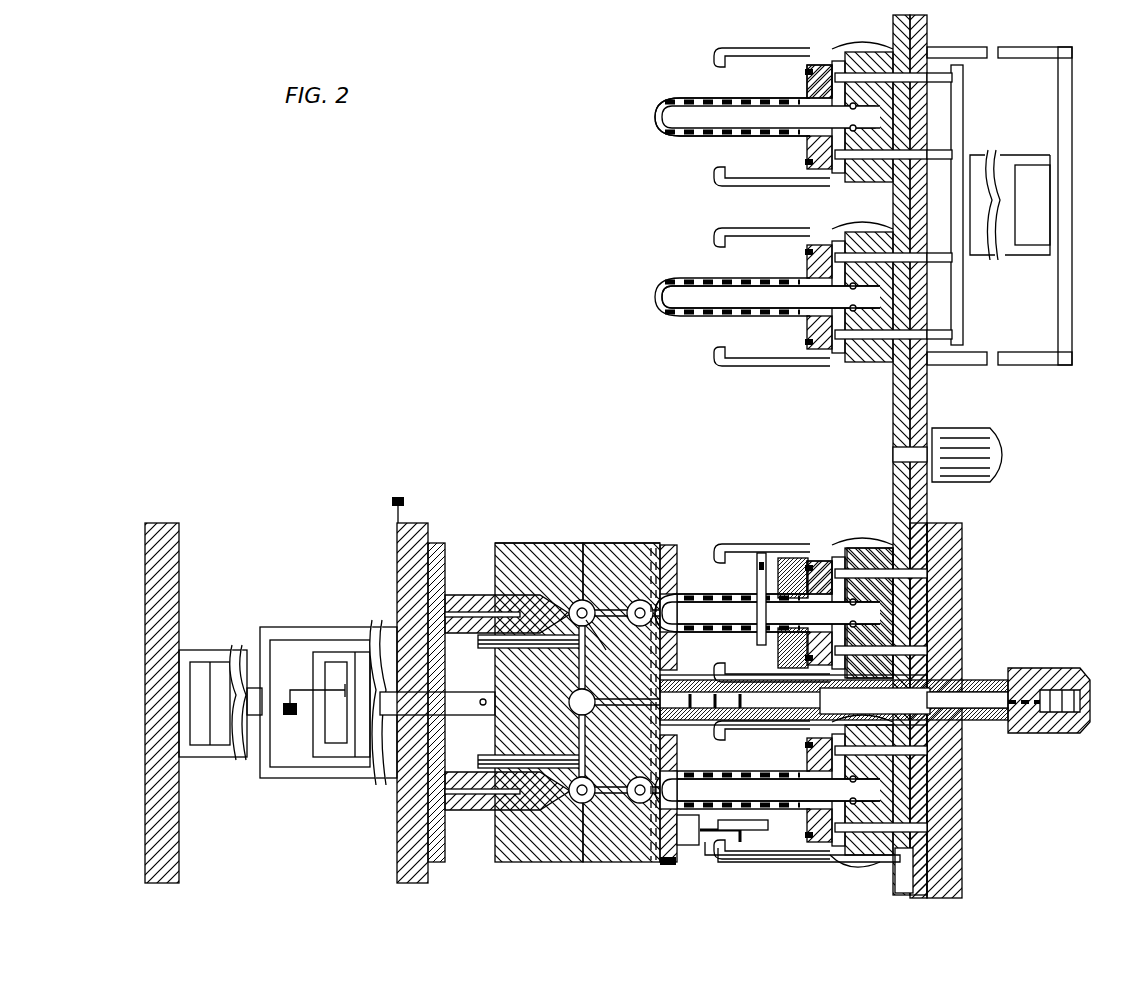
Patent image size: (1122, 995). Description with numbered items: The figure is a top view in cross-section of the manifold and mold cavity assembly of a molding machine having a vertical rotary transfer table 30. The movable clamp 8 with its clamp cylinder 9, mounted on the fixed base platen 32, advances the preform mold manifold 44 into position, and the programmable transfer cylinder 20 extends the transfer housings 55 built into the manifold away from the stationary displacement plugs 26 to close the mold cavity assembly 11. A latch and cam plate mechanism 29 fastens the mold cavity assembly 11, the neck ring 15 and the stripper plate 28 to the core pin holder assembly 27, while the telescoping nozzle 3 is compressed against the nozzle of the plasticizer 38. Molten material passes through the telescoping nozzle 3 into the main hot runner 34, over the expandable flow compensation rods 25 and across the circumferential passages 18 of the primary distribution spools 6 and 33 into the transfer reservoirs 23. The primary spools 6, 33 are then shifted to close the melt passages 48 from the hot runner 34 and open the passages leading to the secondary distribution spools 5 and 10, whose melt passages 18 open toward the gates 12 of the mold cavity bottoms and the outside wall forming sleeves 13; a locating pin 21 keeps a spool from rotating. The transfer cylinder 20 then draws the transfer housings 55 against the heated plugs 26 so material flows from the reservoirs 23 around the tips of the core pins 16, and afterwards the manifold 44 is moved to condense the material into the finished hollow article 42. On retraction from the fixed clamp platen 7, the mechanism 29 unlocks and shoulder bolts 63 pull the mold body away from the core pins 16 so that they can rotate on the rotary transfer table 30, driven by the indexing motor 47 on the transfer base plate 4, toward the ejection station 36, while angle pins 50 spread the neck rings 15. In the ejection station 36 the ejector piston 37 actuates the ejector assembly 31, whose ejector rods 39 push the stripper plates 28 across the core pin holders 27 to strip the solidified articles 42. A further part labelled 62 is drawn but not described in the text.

The telescoping nozzle 3 is at (945, 727).
The transfer base plate 4 is at (925, 848).
The secondary distribution spool 5 is at (640, 778).
The primary distribution spool 6 is at (590, 805).
The fixed clamp platen 7 is at (960, 878).
The movable clamp 8 is at (412, 828).
The clamp cylinder 9 is at (217, 718).
The secondary distribution spool 10 is at (645, 628).
The mold cavity assembly 11 is at (700, 835).
The gate 12 is at (672, 865).
The outside wall forming sleeve 13 is at (718, 845).
The neck ring 15 is at (790, 802).
The core pin 16 is at (710, 303).
The circumferential melt passage 18 is at (582, 600).
The programmable transfer cylinder 20 is at (363, 680).
The locating pin 21 is at (625, 548).
The transfer reservoir 23 is at (552, 800).
The expandable flow compensation rod 25 is at (490, 640).
The stationary displacement plug 26 is at (488, 800).
The core pin holder assembly 27 is at (858, 68).
The stripper plate 28 is at (830, 55).
The latch and cam plate mechanism 29 is at (778, 858).
The rotary transfer table 30 is at (905, 872).
The ejector assembly 31 is at (958, 78).
The fixed base platen 32 is at (165, 843).
The primary distribution spool 33 is at (607, 645).
The main hot runner 34 is at (570, 698).
The ejection station 36 is at (1035, 52).
The ejector piston 37 is at (1010, 178).
The plasticizer 38 is at (1068, 722).
The ejector rod 39 is at (935, 78).
The hollow article 42 is at (665, 103).
The preform mold manifold 44 is at (520, 848).
The indexing motor 47 is at (1002, 455).
The melt passage 48 is at (592, 680).
The angle pin 50 is at (782, 565).
The transfer housing 55 is at (553, 572).
The cam 62 is at (860, 860).
The shoulder bolt 63 is at (758, 568).